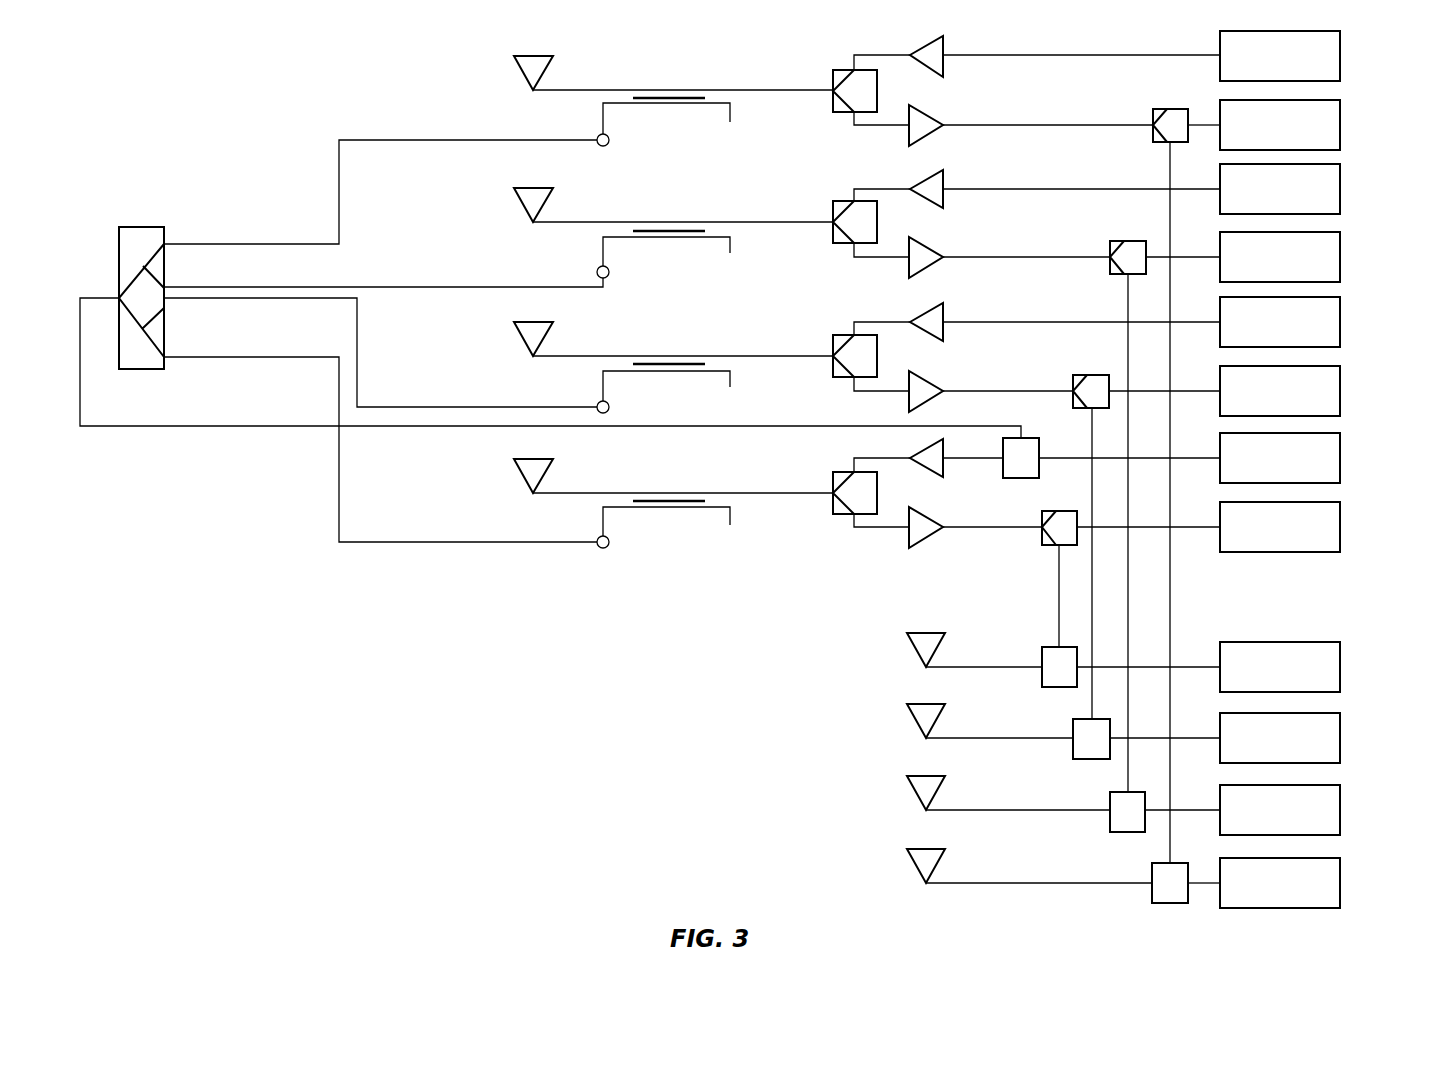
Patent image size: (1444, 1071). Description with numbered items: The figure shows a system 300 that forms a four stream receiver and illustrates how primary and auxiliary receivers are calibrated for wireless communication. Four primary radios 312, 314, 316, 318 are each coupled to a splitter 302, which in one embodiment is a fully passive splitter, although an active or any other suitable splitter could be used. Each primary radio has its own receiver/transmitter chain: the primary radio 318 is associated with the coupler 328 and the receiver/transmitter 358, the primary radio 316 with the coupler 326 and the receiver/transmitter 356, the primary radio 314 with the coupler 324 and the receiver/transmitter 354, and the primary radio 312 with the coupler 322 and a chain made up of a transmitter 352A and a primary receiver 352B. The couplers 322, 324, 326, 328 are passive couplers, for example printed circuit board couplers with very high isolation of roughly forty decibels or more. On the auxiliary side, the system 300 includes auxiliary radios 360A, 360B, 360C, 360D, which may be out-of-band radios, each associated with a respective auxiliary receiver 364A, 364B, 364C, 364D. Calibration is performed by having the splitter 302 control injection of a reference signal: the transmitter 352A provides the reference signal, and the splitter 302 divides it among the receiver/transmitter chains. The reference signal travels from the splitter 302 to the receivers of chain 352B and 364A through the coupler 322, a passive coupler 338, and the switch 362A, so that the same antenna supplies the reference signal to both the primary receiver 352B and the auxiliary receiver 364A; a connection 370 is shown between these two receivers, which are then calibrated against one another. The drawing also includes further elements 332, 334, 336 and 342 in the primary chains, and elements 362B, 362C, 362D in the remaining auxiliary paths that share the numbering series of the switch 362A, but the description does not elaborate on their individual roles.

The system 300 is at (212, 110).
The splitter 302 is at (550, 341).
The primary radio 312 is at (602, 502).
The primary radio 314 is at (605, 367).
The primary radio 316 is at (603, 233).
The primary radio 318 is at (607, 101).
The coupler 322 is at (909, 493).
The coupler 324 is at (998, 357).
The coupler 326 is at (998, 224).
The coupler 328 is at (998, 91).
The combiner 332 is at (1160, 471).
The combiner 334 is at (1140, 502).
The combiner 336 is at (1121, 532).
The passive coupler 338 is at (1107, 571).
The switch 342 is at (1085, 455).
The transmitter 352A is at (1321, 458).
The primary receiver 352B is at (1321, 527).
The receiver/transmitter 354 is at (1313, 356).
The receiver/transmitter 356 is at (1313, 223).
The receiver/transmitter 358 is at (1313, 90).
The auxiliary radio 360A is at (932, 650).
The auxiliary radio 360B is at (948, 721).
The auxiliary radio 360C is at (966, 793).
The auxiliary radio 360D is at (987, 866).
The switch 362A is at (1098, 685).
The switch 362B is at (1115, 757).
The switch 362C is at (1132, 830).
The switch 362D is at (1152, 904).
The auxiliary receiver 364A is at (1321, 667).
The auxiliary receiver 364B is at (1321, 738).
The auxiliary receiver 364C is at (1321, 810).
The auxiliary receiver 364D is at (1322, 883).
The connection 370 is at (1015, 608).